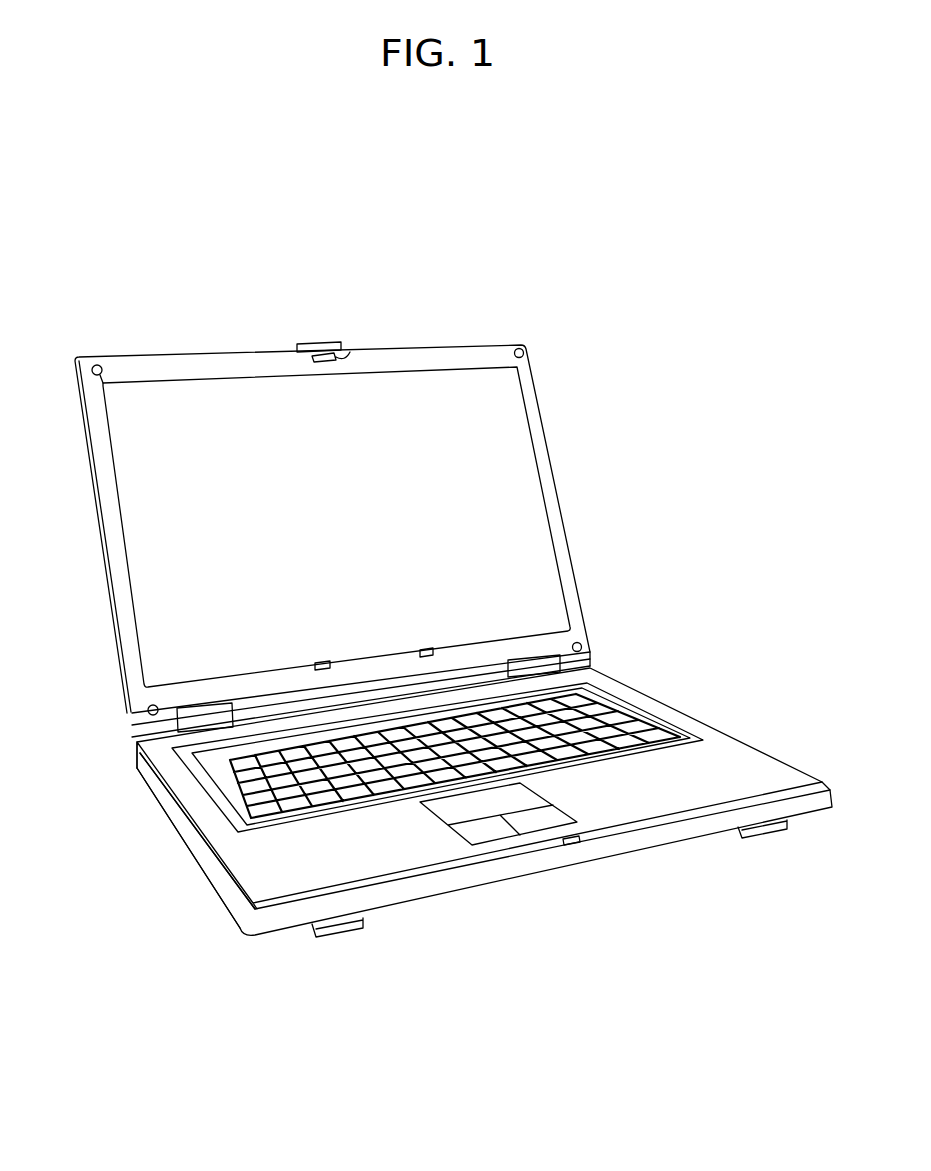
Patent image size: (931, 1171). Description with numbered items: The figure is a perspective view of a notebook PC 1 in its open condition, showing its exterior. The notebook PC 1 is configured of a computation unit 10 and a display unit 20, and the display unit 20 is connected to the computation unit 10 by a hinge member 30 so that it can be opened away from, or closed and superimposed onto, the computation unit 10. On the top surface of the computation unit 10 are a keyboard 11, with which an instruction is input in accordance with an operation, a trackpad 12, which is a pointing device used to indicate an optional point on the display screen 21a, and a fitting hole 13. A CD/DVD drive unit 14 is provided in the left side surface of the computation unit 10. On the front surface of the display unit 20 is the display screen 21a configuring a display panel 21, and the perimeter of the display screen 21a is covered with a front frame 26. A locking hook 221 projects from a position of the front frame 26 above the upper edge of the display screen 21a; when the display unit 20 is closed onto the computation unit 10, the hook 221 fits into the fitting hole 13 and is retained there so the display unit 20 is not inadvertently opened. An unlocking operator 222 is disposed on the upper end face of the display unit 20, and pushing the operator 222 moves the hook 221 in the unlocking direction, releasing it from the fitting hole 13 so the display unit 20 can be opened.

The notebook PC 1 is at (515, 285).
The computation unit 10 is at (725, 676).
The keyboard 11 is at (611, 719).
The trackpad 12 is at (462, 806).
The fitting hole 13 is at (563, 842).
The CD/DVD drive unit 14 is at (163, 800).
The display unit 20 is at (636, 498).
The display panel 21 is at (497, 448).
The display screen 21a is at (513, 403).
The front frame 26 is at (487, 352).
The hinge member 30 is at (541, 665).
The locking hook 221 is at (348, 353).
The unlocking operator 222 is at (306, 343).